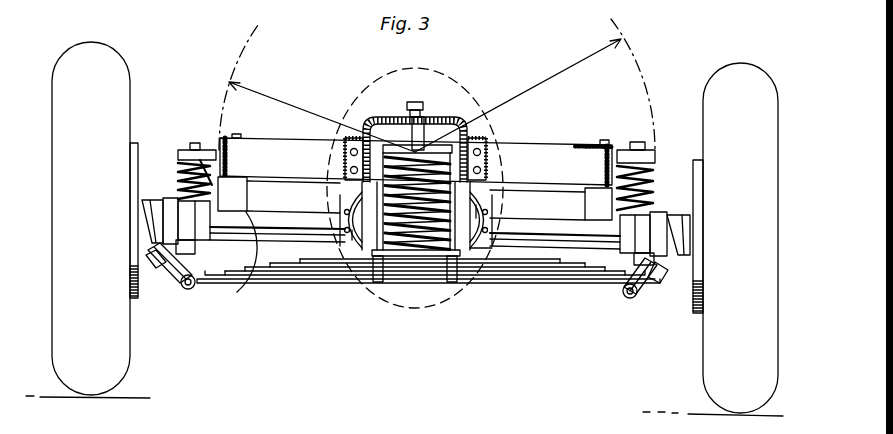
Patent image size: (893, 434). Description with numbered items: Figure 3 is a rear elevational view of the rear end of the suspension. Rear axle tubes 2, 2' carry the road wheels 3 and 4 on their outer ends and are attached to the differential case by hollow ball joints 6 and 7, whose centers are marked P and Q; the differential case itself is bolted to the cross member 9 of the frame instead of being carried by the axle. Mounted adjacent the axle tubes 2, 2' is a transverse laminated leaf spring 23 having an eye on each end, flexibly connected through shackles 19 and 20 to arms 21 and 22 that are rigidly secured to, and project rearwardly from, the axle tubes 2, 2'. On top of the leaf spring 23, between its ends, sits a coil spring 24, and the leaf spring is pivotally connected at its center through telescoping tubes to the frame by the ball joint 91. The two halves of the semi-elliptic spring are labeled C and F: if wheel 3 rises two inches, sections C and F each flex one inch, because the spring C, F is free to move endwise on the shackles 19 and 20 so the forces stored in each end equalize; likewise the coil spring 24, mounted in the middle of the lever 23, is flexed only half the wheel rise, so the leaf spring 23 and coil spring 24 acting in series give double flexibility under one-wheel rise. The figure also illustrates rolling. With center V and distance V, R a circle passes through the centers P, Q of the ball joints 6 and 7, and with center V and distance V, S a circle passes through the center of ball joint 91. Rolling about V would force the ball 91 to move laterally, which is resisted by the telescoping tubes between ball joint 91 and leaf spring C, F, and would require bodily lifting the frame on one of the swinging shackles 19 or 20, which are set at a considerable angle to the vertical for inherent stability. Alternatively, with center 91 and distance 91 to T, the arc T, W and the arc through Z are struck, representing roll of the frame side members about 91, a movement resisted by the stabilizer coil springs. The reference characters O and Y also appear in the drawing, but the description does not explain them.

The rear axle tube 2 is at (277, 209).
The rear axle tube 2' is at (555, 218).
The road wheel 3 is at (95, 218).
The road wheel 4 is at (735, 238).
The hollow ball joint 6 is at (355, 228).
The hollow ball joint 7 is at (470, 230).
The cross member 9 is at (532, 152).
The ball joint 91 is at (432, 146).
The shackle 19 is at (175, 277).
The shackle 20 is at (634, 298).
The arm 21 is at (150, 252).
The arm 22 is at (680, 263).
The transverse laminated leaf spring 23 is at (452, 262).
The coil spring 24 is at (347, 218).
The spring section C is at (320, 281).
The spring section F is at (510, 283).
The housing O is at (363, 163).
The center of ball joint P is at (325, 235).
The center of ball joint Q is at (483, 245).
The circle radius point R is at (478, 212).
The circle radius point S is at (428, 262).
The arc point T is at (304, 88).
The rolling center V is at (417, 228).
The arc point W is at (236, 259).
The swing arc Y is at (535, 76).
The arc point Z is at (650, 182).